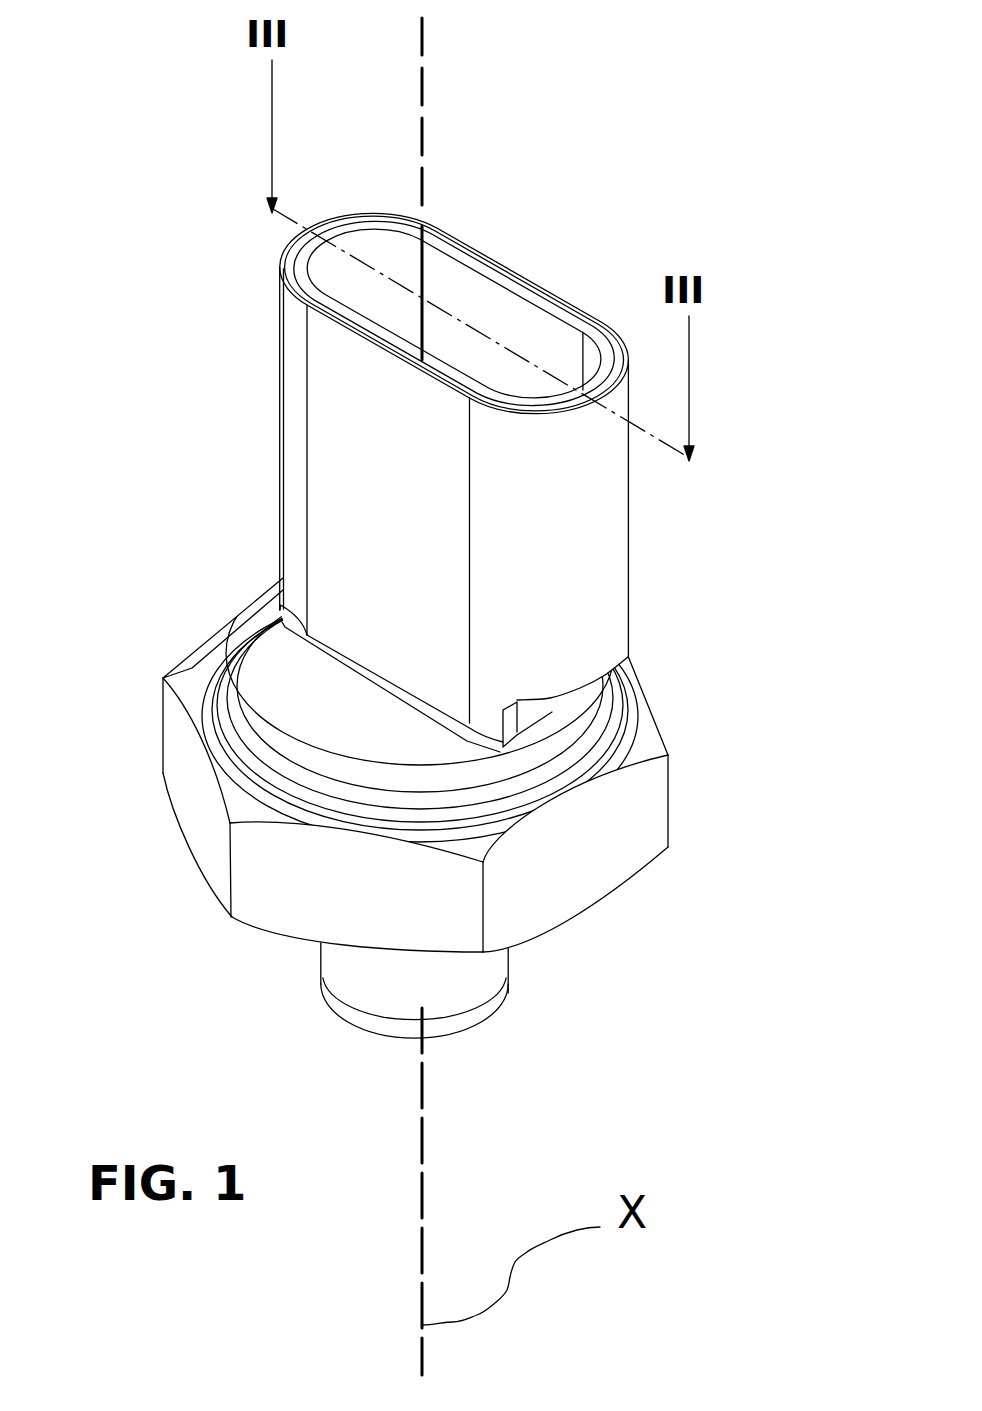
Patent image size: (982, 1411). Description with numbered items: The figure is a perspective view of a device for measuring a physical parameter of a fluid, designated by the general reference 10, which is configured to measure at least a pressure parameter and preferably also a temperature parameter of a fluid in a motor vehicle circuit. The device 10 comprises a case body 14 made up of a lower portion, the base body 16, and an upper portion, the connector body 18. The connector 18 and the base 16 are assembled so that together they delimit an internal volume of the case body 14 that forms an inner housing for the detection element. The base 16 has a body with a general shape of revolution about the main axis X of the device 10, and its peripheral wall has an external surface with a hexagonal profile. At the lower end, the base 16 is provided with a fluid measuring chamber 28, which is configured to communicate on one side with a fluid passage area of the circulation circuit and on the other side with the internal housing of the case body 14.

The measuring device 10 is at (602, 932).
The case body 14 is at (630, 810).
The base body 16 is at (347, 902).
The connector body 18 is at (280, 500).
The fluid measuring chamber 28 is at (452, 985).